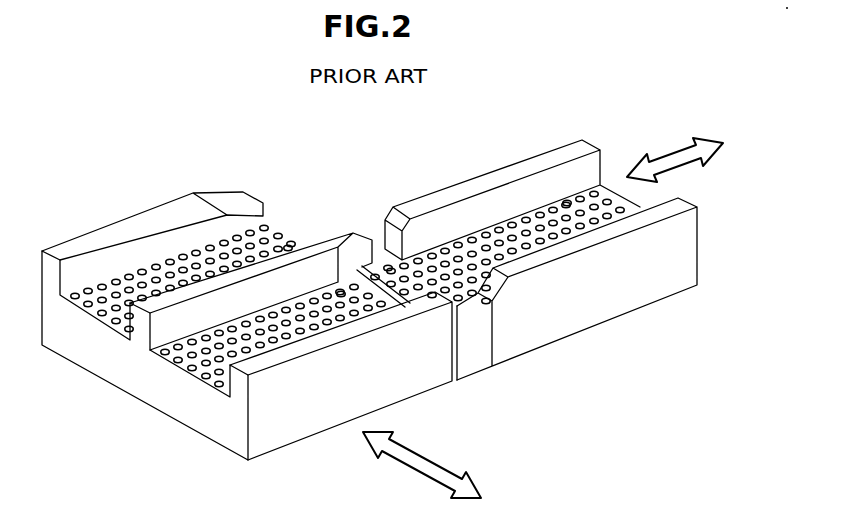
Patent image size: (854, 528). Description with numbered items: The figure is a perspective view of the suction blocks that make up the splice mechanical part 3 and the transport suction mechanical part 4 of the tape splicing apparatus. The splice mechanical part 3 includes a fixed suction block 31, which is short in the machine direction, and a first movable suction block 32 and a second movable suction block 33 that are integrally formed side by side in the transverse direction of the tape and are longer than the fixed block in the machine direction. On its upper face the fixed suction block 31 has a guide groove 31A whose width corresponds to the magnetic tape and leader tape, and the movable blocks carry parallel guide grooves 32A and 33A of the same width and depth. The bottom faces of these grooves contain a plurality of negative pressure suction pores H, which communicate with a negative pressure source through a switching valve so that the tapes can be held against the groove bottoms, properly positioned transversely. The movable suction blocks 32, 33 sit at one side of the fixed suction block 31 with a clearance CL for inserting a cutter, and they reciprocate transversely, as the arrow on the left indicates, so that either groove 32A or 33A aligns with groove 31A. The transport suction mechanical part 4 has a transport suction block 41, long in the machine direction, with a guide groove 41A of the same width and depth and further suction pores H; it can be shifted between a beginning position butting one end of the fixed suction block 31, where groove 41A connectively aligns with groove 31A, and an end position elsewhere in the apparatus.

The splice mechanical part 3 is at (96, 167).
The transport suction mechanical part 4 is at (496, 166).
The second movable suction block 33 is at (97, 332).
The first movable suction block 32 is at (185, 387).
The fixed suction block 31 is at (473, 338).
The guide groove 33A is at (189, 240).
The guide groove 32A is at (251, 303).
The guide groove 31A is at (387, 263).
The transport suction block 41 is at (598, 288).
The guide groove 41A is at (481, 221).
The negative pressure suction pore H is at (567, 200).
The clearance CL is at (455, 380).